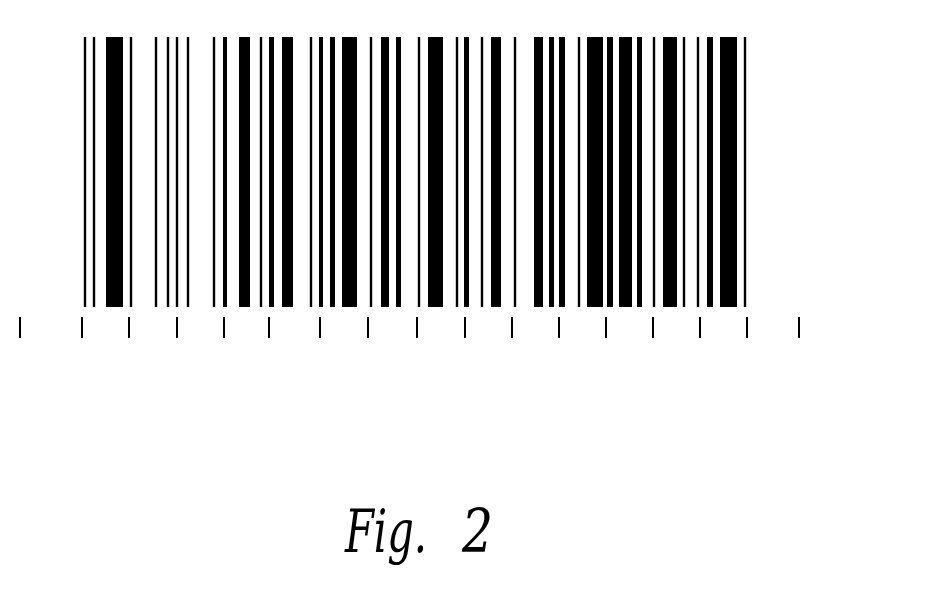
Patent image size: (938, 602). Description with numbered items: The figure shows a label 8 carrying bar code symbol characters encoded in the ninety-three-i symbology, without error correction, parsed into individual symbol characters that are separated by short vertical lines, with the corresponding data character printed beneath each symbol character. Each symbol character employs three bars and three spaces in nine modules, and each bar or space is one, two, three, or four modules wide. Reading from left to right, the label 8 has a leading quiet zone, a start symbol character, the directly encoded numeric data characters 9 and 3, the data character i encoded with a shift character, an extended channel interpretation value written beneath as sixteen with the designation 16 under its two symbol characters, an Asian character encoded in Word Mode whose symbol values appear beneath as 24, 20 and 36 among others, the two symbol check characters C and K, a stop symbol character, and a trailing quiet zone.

The label 8 is at (452, 206).
The bar code character 9 is at (158, 206).
The bar code character 3 is at (195, 206).
The bar code character 16 is at (387, 206).
The bar code character 24 is at (482, 206).
The bar code character 20 is at (534, 206).
The bar code character 36 is at (581, 206).